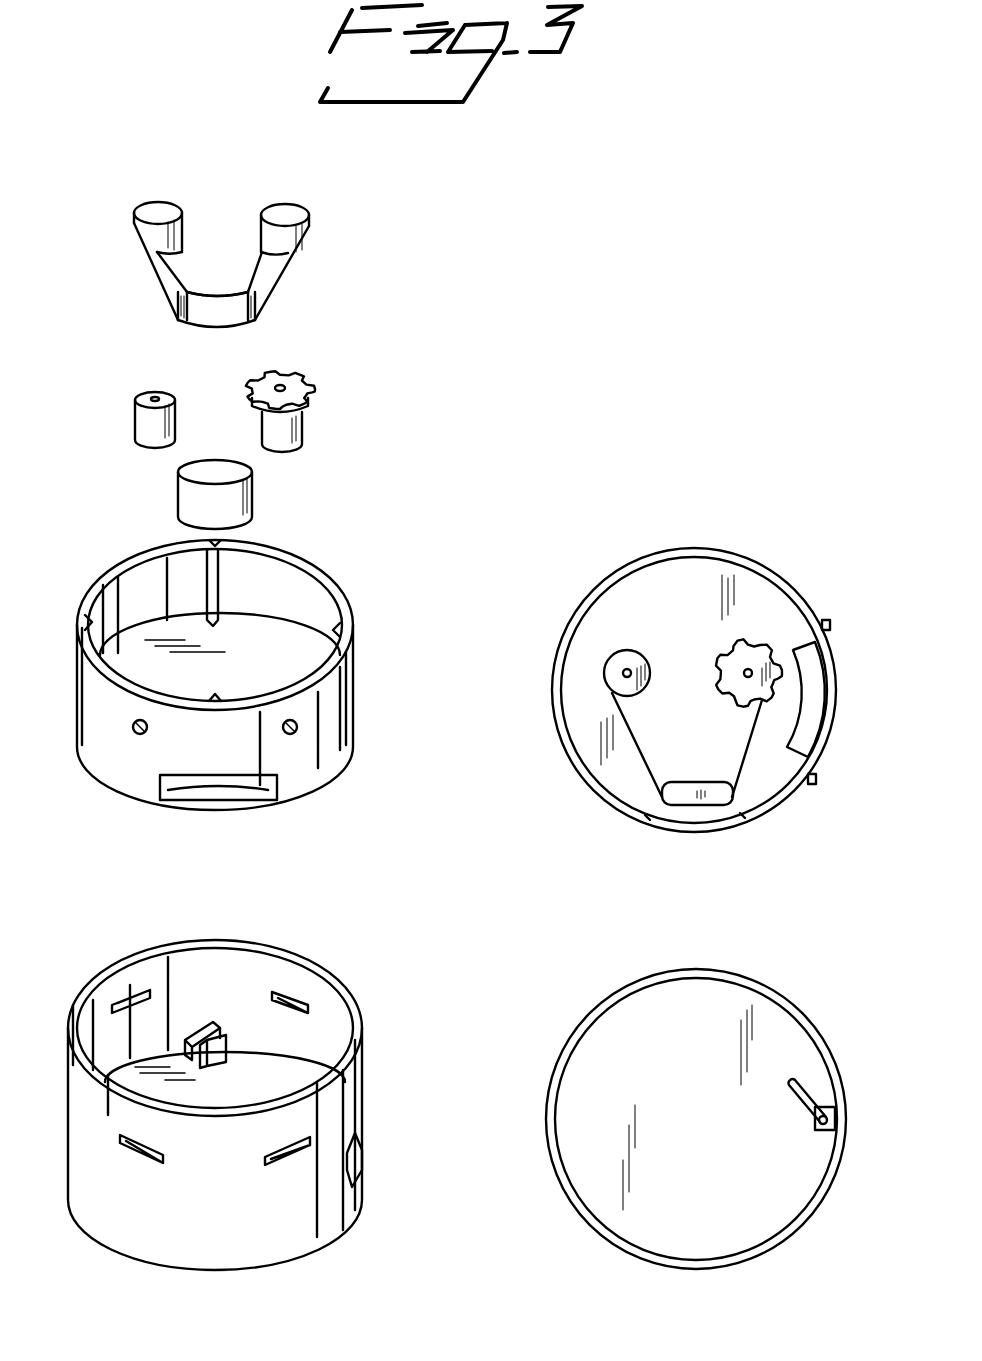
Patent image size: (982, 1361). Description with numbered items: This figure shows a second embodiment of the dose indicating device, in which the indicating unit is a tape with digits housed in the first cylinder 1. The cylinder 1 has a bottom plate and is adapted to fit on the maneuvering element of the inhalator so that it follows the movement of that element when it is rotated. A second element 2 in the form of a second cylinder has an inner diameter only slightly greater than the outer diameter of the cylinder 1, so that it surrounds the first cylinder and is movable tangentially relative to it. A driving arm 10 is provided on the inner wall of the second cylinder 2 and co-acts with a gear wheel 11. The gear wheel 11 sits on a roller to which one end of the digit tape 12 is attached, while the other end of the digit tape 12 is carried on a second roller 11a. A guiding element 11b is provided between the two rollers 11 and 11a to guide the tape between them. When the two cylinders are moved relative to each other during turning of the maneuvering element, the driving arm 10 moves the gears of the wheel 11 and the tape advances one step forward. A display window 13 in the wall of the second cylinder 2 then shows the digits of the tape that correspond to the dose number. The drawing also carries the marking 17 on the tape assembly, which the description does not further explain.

The cylinder 1 is at (352, 580).
The second element 2 is at (351, 967).
The driving arm 10 is at (213, 1018).
The gear wheel 11 is at (300, 392).
The second roller 11a is at (133, 418).
The guiding element 11b is at (178, 497).
The digit tape 12 is at (278, 275).
The display window 13 is at (357, 1153).
The bracket base 17 is at (217, 309).